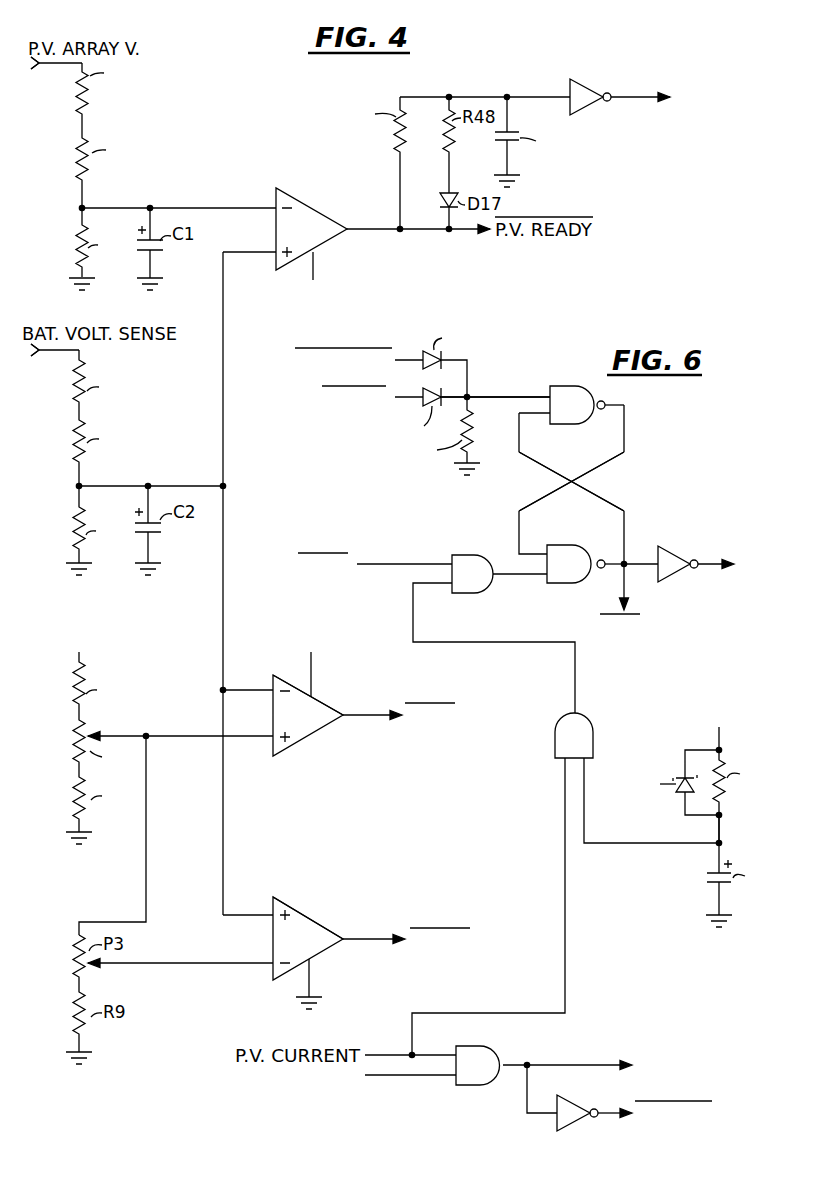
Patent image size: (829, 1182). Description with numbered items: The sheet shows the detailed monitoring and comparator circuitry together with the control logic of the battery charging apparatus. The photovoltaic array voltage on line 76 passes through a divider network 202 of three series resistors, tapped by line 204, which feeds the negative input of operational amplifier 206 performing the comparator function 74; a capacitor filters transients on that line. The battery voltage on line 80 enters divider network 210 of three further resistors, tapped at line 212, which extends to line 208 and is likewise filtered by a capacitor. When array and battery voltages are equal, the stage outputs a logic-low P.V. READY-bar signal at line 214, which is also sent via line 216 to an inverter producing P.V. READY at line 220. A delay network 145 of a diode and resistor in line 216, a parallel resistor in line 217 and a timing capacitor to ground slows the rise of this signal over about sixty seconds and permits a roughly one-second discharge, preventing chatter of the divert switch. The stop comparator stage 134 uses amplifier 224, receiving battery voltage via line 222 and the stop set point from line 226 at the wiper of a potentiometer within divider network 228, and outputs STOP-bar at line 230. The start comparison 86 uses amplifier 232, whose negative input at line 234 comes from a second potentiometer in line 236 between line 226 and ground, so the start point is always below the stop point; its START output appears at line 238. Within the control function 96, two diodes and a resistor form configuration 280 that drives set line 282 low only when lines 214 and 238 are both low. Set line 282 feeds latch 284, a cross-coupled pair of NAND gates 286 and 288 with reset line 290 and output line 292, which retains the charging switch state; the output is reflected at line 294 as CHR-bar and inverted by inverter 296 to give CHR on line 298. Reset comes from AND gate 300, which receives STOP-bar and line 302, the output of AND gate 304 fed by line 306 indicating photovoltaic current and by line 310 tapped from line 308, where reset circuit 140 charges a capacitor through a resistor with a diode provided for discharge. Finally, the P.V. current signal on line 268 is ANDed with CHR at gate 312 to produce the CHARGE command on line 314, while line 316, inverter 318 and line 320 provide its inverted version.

In FIG. 4, the comparator function 74 is at (347, 257).
In FIG. 4, the line 76 is at (66, 64).
In FIG. 4, the line 80 is at (60, 352).
In FIG. 4, the comparison procedure 86 is at (325, 953).
In FIG. 6, the control function 96 is at (578, 338).
In FIG. 4, the comparator stage 134 is at (385, 656).
In FIG. 6, the reset circuit 140 is at (703, 817).
In FIG. 4, the delay network 145 is at (533, 163).
In FIG. 4, the divider network 202 is at (137, 134).
In FIG. 4, the line 204 is at (117, 208).
In FIG. 4, the operational amplifier 206 is at (286, 270).
In FIG. 4, the line 208 is at (223, 428).
In FIG. 4, the divider network 210 is at (180, 362).
In FIG. 4, the line 212 is at (110, 486).
In FIG. 4, the line 214 is at (386, 232).
In FIG. 6, the line 214 is at (406, 360).
In FIG. 4, the line 216 is at (483, 97).
In FIG. 4, the line 217 is at (400, 200).
In FIG. 4, the line 220 is at (632, 100).
In FIG. 4, the line 222 is at (240, 690).
In FIG. 4, the operational amplifier 224 is at (316, 701).
In FIG. 4, the line 226 is at (192, 735).
In FIG. 4, the divider network 228 is at (175, 656).
In FIG. 4, the line 230 is at (366, 718).
In FIG. 6, the line 230 is at (380, 564).
In FIG. 4, the operational amplifier 232 is at (299, 912).
In FIG. 4, the line 234 is at (177, 965).
In FIG. 4, the line 236 is at (146, 859).
In FIG. 4, the line 238 is at (368, 938).
In FIG. 6, the line 238 is at (395, 400).
In FIG. 6, the line 268 is at (398, 1052).
In FIG. 6, the diode ANDing configuration 280 is at (525, 312).
In FIG. 6, the set line 282 is at (487, 397).
In FIG. 6, the flip-flop latch 284 is at (694, 465).
In FIG. 6, the NAND gate 286 is at (562, 386).
In FIG. 6, the NAND gate 288 is at (573, 545).
In FIG. 6, the reset line 290 is at (524, 575).
In FIG. 6, the output line 292 is at (640, 564).
In FIG. 6, the line 294 is at (633, 590).
In FIG. 6, the inverter 296 is at (683, 574).
In FIG. 6, the line 298 is at (696, 562).
In FIG. 6, the AND gate 300 is at (466, 555).
In FIG. 6, the line 302 is at (484, 642).
In FIG. 6, the AND gate 304 is at (591, 722).
In FIG. 6, the line 306 is at (492, 1013).
In FIG. 6, the line 308 is at (747, 830).
In FIG. 6, the line 310 is at (624, 843).
In FIG. 6, the AND gate 312 is at (492, 1046).
In FIG. 6, the line 314 is at (568, 1065).
In FIG. 6, the line 316 is at (527, 1108).
In FIG. 6, the inverter 318 is at (571, 1131).
In FIG. 6, the line 320 is at (611, 1118).